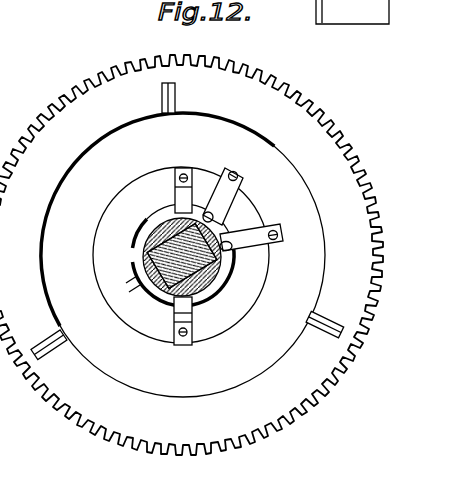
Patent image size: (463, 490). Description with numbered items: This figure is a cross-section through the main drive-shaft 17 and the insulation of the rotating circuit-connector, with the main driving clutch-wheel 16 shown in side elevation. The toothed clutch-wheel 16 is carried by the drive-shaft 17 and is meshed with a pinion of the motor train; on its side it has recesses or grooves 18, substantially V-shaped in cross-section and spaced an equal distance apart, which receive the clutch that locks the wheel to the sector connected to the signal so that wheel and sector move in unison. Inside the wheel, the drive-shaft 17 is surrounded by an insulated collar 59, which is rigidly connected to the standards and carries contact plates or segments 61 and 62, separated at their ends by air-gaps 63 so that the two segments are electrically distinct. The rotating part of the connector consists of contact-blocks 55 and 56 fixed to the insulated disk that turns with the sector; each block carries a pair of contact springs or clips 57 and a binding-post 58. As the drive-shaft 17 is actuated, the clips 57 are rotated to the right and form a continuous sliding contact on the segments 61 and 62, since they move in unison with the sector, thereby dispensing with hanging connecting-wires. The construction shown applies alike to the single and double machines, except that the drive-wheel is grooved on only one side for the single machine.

The main driving clutch-wheel 16 is at (191, 255).
The drive-shaft 17 is at (147, 248).
The recesses or grooves 18 is at (176, 96).
The contact-block 55 is at (192, 325).
The contact-block 56 is at (187, 168).
The contact springs or clips 57 is at (176, 196).
The binding-post 58 is at (183, 345).
The insulated collar 59 is at (150, 281).
The contact plate or segment 61 is at (219, 283).
The contact plate or segment 62 is at (134, 233).
The air-gaps 63 is at (222, 233).